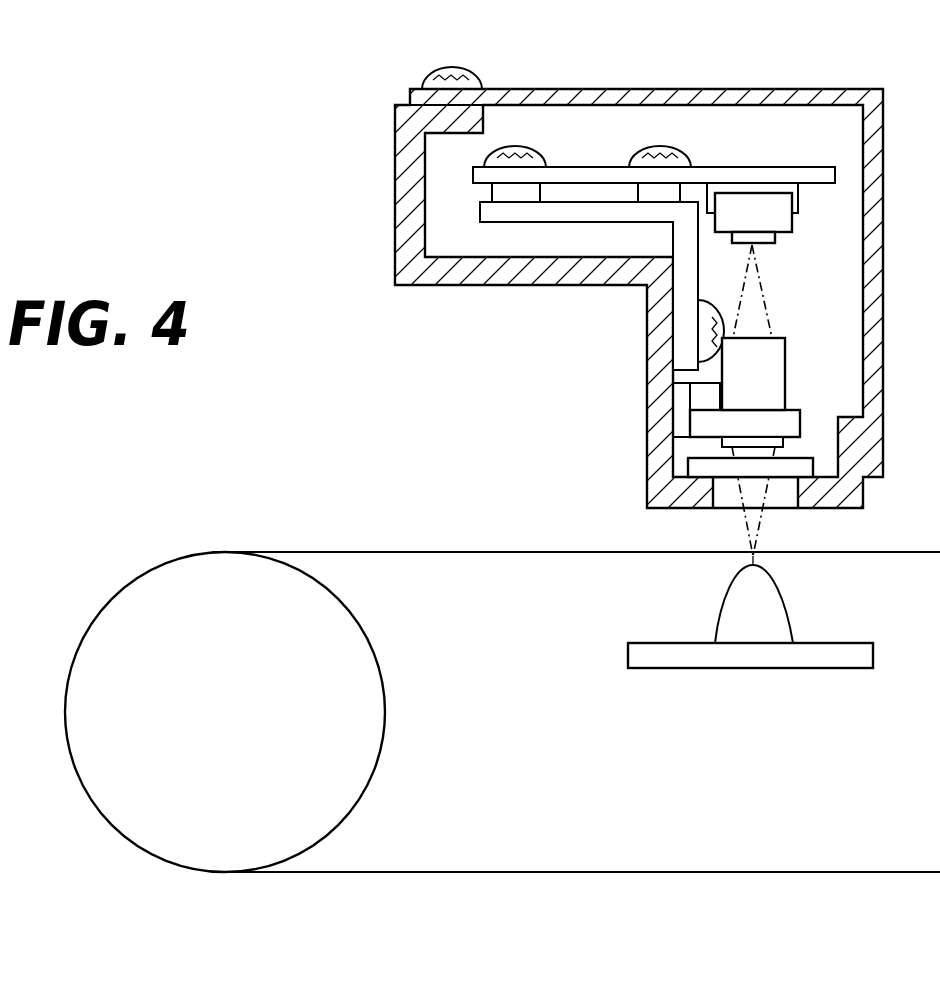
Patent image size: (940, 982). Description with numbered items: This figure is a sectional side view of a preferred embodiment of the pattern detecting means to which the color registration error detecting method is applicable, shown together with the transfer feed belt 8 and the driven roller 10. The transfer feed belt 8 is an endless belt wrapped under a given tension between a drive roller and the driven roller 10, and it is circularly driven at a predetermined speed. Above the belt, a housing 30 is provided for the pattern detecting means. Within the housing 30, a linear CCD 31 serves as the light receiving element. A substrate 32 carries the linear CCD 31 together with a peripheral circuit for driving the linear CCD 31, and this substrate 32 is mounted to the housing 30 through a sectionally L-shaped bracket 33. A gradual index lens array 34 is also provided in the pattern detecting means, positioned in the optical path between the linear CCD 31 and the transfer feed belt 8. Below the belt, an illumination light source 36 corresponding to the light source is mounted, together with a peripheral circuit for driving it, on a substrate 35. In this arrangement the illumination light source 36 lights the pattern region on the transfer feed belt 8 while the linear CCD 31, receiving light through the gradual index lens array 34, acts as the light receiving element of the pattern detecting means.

The transfer feed belt 8 is at (431, 552).
The driven roller 10 is at (133, 582).
The housing 30 is at (400, 211).
The linear CCD 31 is at (755, 201).
The substrate 32 is at (582, 164).
The sectionally L-shaped bracket 33 is at (592, 226).
The gradual index lens array 34 is at (786, 350).
The reflector plate 35 is at (768, 668).
The illumination light source 36 is at (787, 607).